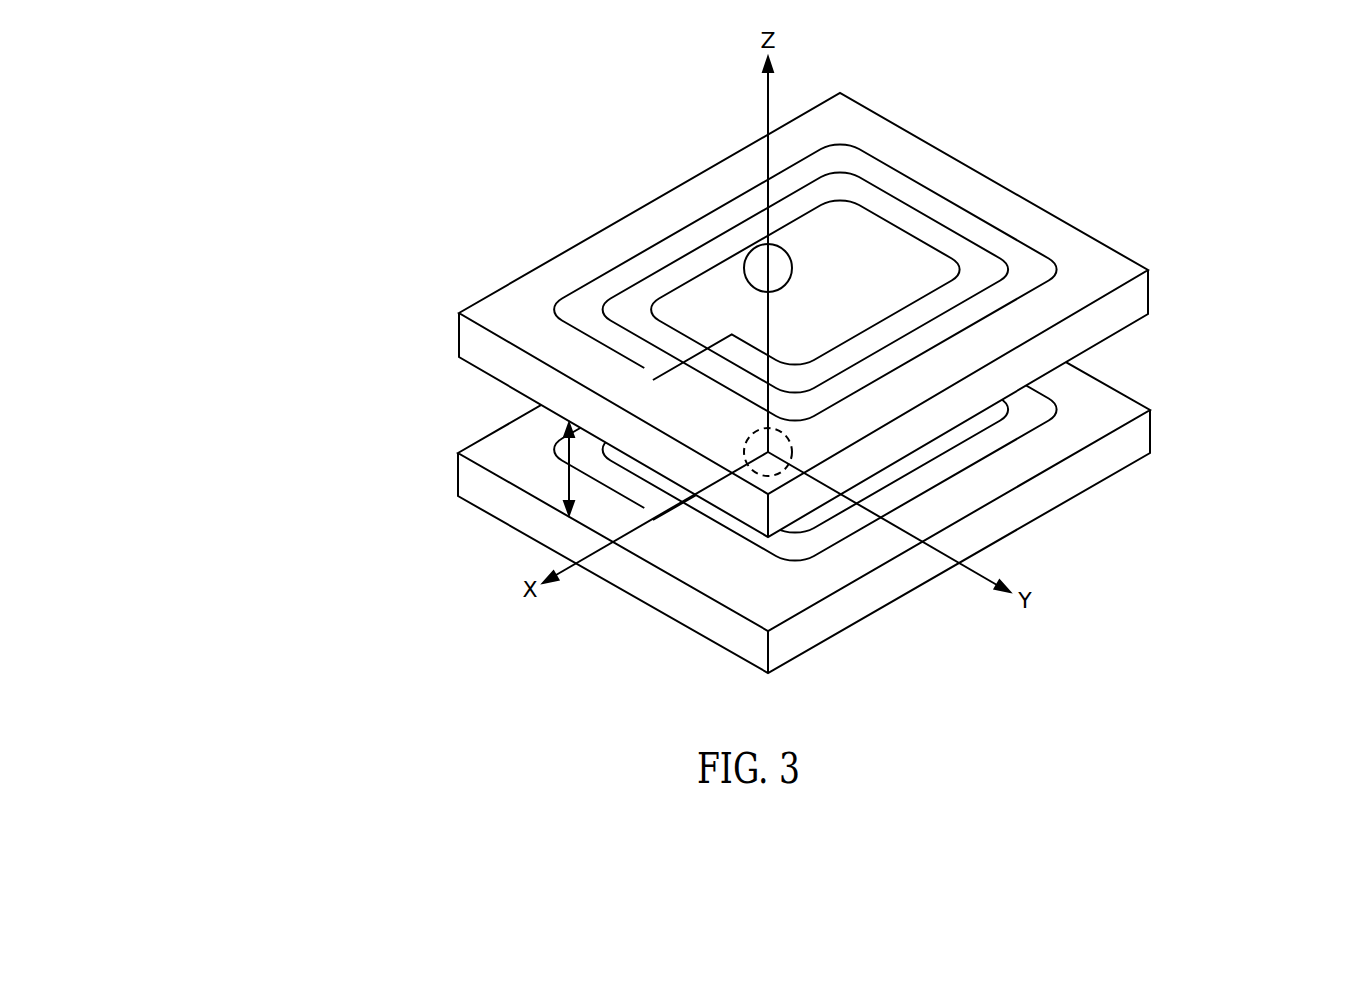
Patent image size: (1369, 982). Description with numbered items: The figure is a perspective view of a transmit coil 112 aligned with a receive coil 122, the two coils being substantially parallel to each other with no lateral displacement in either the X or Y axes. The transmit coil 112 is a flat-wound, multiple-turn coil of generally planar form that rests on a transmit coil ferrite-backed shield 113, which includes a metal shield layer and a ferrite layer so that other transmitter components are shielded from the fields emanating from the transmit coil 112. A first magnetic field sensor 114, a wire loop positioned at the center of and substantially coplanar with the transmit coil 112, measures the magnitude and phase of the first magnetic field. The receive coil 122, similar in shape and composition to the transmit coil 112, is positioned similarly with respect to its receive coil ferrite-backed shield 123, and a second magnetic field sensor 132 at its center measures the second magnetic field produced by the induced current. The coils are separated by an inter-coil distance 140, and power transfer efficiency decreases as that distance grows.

The transmit coil 112 is at (971, 211).
The transmit coil ferrite-backed shield 113 is at (459, 338).
The first magnetic field sensor 114 is at (751, 249).
The receive coil 122 is at (981, 462).
The receive coil ferrite-backed shield 123 is at (459, 481).
The second magnetic field sensor 132 is at (780, 480).
The inter-coil distance 140 is at (560, 445).